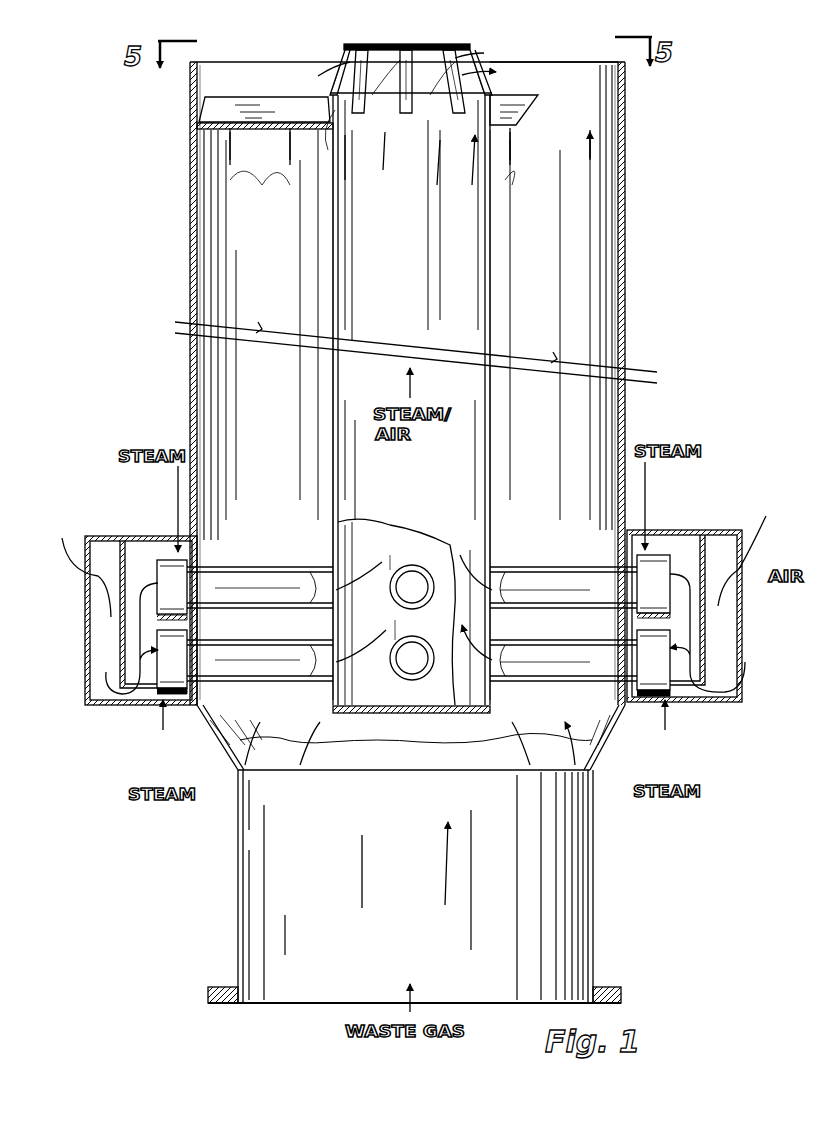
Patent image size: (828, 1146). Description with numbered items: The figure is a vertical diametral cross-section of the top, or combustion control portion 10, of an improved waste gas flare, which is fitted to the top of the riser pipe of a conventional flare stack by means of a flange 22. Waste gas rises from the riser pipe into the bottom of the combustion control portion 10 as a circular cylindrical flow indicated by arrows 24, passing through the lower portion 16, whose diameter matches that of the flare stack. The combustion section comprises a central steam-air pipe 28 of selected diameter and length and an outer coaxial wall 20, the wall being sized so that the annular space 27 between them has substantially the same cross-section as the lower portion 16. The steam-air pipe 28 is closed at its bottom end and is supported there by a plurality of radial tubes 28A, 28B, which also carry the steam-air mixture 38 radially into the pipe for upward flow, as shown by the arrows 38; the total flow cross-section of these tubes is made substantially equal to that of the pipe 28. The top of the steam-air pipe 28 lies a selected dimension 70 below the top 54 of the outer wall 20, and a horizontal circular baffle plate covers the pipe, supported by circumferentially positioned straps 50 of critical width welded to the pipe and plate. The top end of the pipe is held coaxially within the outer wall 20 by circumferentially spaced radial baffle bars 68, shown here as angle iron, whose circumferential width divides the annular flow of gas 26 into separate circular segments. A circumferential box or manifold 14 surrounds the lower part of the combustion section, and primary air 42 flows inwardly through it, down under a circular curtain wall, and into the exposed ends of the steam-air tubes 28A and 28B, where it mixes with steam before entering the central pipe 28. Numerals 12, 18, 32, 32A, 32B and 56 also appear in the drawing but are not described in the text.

The combustion control portion 10 is at (708, 213).
The outer shell 12 is at (632, 72).
The circumferential box, conduit or manifold 14 is at (100, 536).
The lower portion 16 is at (595, 890).
The conical transition section 18 is at (594, 760).
The outer coaxial wall 20 is at (185, 292).
The flange 22 is at (614, 988).
The arrows illustrating upward flow of waste gas 24 is at (445, 886).
The annular flow of gas 26 is at (288, 170).
The annular space 27 is at (548, 287).
The central steam-air pipe 28 is at (328, 392).
The radial steam-air tube 28A is at (288, 572).
The radial steam-air tube 28B is at (275, 672).
The central tube 32 is at (440, 46).
The upper pipe flanges 32A is at (160, 560).
The lower pipe flanges 32B is at (175, 690).
The steam-air mixture flow 38 is at (470, 165).
The primary air 42 is at (718, 731).
The support straps 50 is at (418, 46).
The top of the outer cylindrical wall 54 is at (548, 62).
The struts 56 is at (376, 84).
The radial baffle arms or bars 68 is at (297, 96).
The selected dimension 70 is at (262, 80).